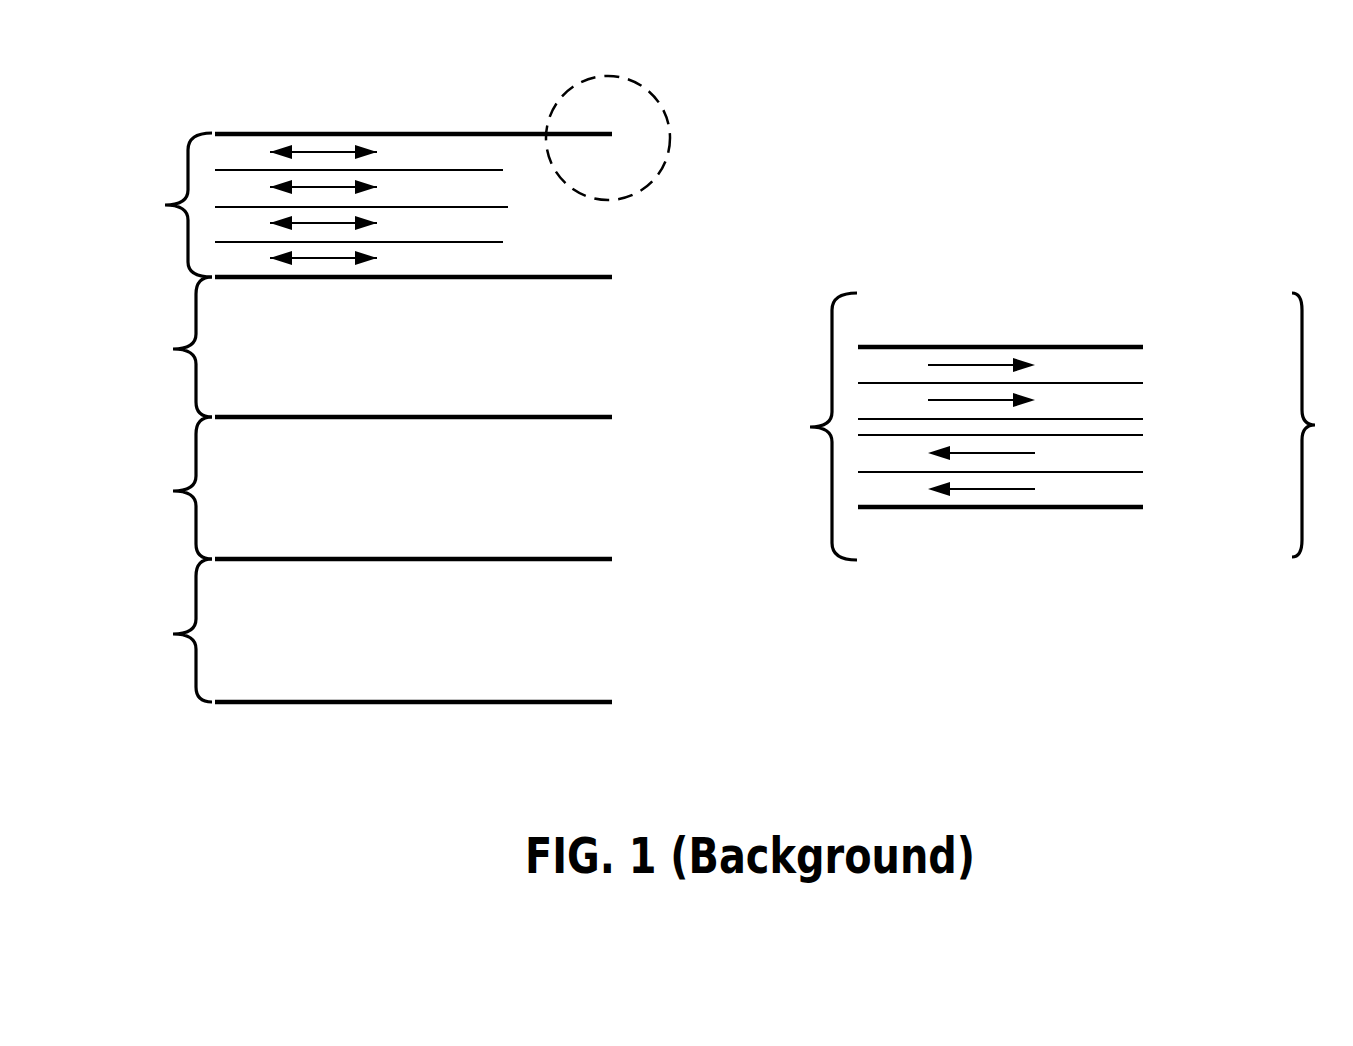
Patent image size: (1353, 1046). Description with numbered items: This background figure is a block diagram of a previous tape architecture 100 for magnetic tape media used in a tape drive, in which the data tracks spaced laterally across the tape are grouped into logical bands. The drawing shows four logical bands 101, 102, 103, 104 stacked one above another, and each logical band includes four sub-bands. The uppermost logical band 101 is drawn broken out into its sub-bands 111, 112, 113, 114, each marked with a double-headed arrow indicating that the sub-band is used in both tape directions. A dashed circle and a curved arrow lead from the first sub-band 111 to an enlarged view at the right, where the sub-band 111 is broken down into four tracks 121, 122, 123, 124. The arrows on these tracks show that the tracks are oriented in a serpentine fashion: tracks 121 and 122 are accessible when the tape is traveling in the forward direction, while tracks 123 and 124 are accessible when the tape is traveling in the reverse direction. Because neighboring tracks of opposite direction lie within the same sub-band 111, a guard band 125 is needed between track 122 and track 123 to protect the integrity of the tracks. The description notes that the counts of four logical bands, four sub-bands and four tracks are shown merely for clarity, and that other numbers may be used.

The tape architecture 100 is at (383, 50).
The logical band 101 is at (166, 205).
The logical band 102 is at (166, 347).
The logical band 103 is at (166, 488).
The logical band 104 is at (166, 630).
The sub-band 111 is at (995, 283).
The sub-band 112 is at (361, 189).
The sub-band 113 is at (359, 225).
The sub-band 114 is at (386, 256).
The track 121 is at (1000, 370).
The track 122 is at (1000, 402).
The track 123 is at (1000, 459).
The track 124 is at (1026, 488).
The guard band 125 is at (1143, 427).